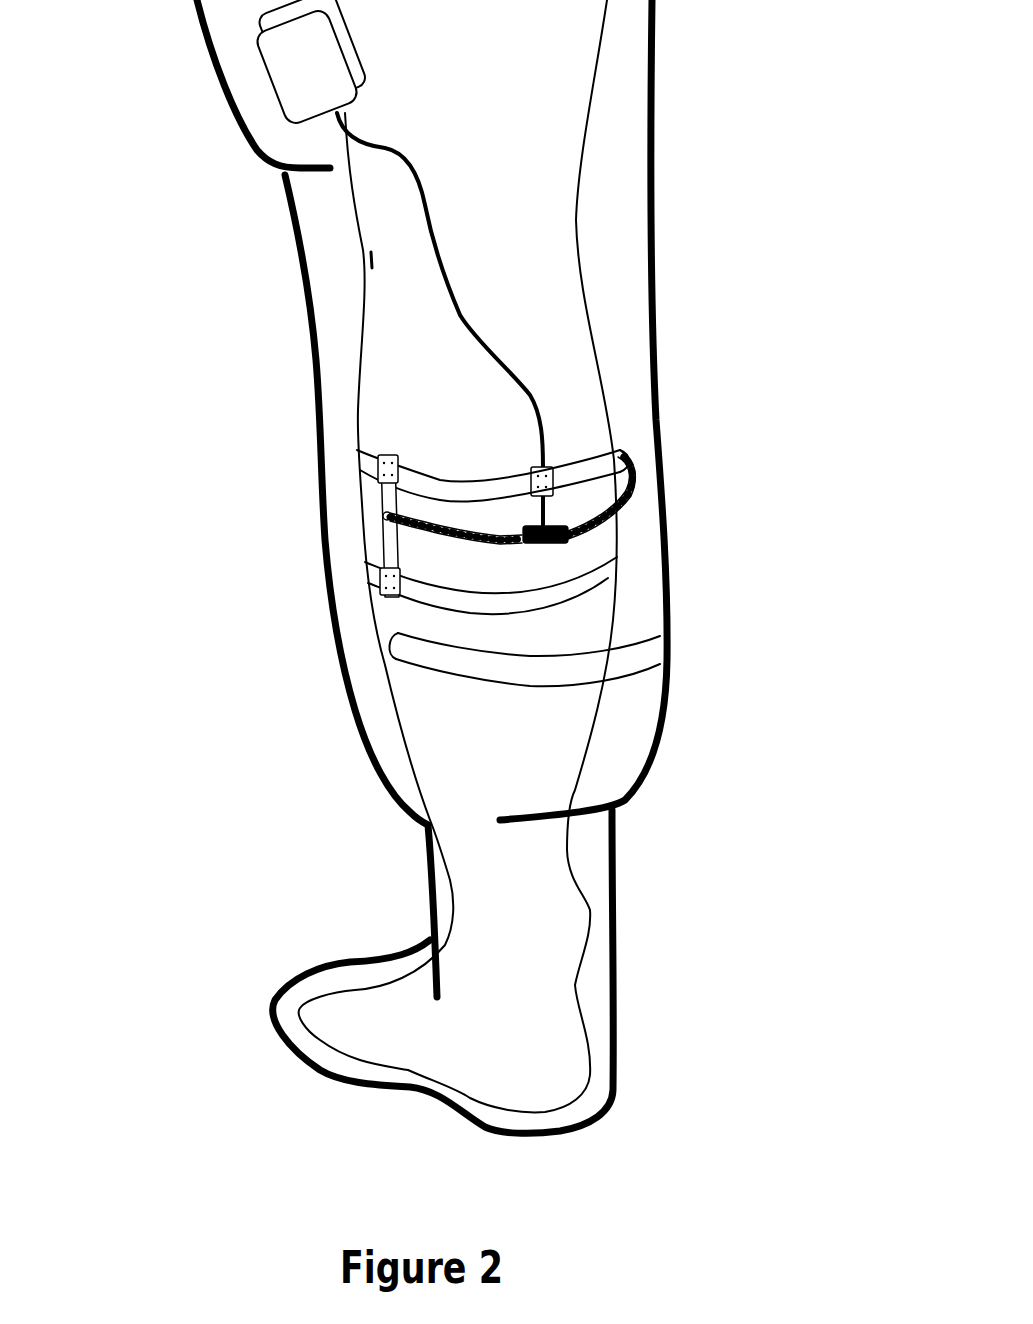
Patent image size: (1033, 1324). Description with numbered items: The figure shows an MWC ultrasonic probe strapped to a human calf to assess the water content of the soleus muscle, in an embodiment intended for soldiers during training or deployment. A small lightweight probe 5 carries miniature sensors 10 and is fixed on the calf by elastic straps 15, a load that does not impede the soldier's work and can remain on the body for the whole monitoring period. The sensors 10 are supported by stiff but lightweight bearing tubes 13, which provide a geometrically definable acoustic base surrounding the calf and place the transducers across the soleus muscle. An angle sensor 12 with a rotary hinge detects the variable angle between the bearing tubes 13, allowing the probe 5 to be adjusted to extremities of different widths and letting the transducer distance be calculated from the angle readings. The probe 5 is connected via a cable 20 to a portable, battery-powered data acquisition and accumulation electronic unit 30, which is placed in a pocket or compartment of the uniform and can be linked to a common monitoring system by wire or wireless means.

The probe 5 is at (275, 487).
The sensor 10 is at (383, 519).
The angle sensor 12 is at (568, 537).
The bearing tube 13 is at (456, 540).
The elastic strap 15 is at (438, 484).
The cable 20 is at (497, 355).
The electronic unit 30 is at (304, 65).